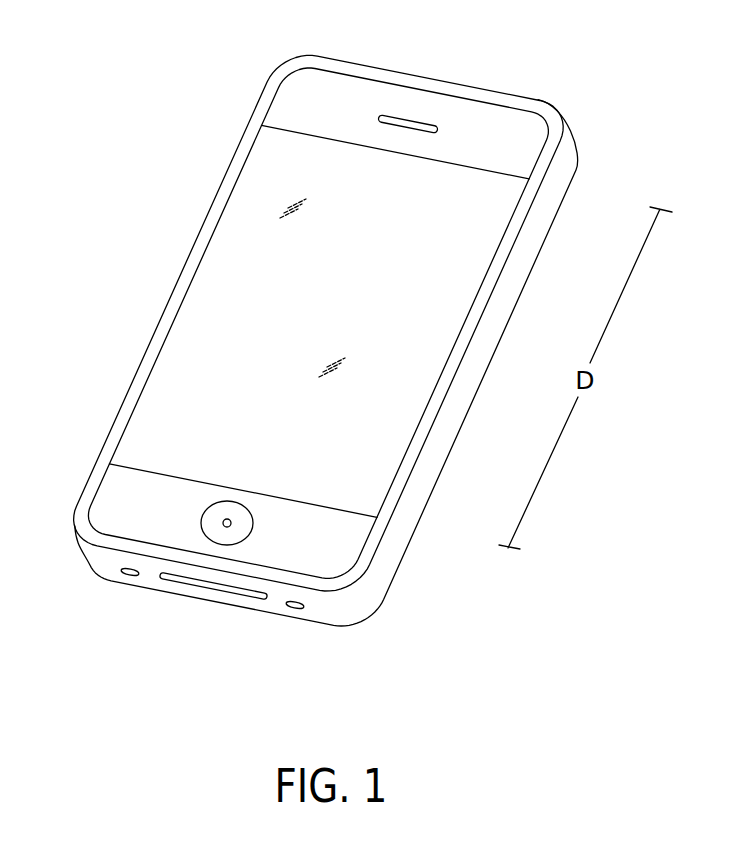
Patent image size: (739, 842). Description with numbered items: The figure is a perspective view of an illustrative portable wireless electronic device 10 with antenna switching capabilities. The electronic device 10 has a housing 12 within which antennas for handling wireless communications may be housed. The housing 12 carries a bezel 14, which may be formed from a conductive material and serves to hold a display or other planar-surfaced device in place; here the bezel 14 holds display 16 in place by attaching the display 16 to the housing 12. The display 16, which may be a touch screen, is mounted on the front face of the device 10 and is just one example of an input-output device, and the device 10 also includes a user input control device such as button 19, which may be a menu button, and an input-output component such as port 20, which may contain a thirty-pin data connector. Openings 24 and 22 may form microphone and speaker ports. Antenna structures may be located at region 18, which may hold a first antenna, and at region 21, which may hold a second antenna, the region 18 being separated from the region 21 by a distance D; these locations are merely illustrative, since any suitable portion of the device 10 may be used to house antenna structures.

The electronic device 10 is at (612, 66).
The housing 12 is at (437, 470).
The bezel 14 is at (193, 257).
The display 16 is at (498, 206).
The region 18 is at (90, 457).
The button 19 is at (222, 548).
The port 20 is at (246, 599).
The region 21 is at (607, 122).
The opening 22 is at (129, 578).
The opening 24 is at (295, 612).